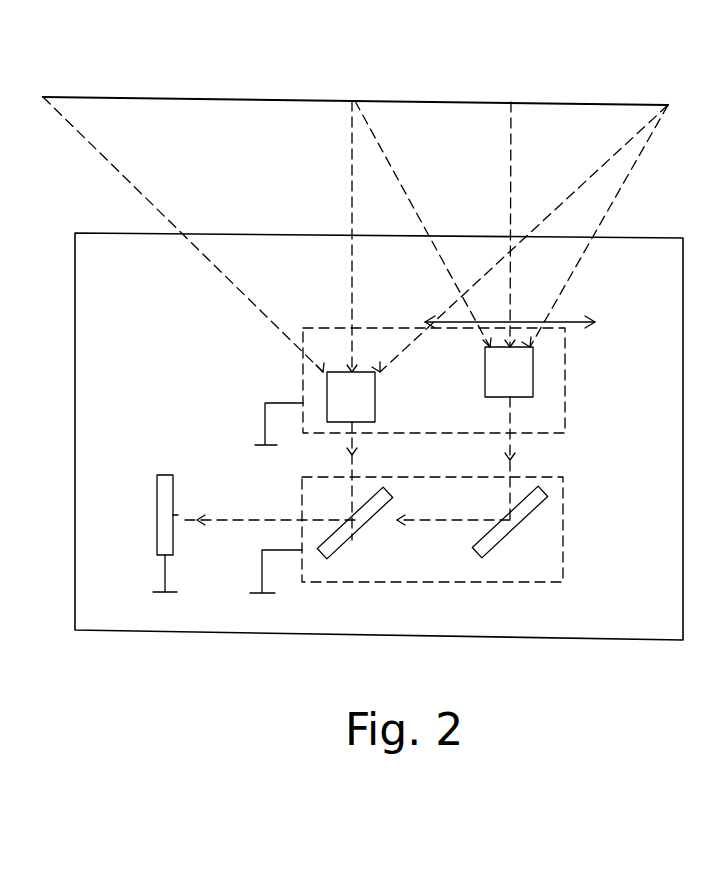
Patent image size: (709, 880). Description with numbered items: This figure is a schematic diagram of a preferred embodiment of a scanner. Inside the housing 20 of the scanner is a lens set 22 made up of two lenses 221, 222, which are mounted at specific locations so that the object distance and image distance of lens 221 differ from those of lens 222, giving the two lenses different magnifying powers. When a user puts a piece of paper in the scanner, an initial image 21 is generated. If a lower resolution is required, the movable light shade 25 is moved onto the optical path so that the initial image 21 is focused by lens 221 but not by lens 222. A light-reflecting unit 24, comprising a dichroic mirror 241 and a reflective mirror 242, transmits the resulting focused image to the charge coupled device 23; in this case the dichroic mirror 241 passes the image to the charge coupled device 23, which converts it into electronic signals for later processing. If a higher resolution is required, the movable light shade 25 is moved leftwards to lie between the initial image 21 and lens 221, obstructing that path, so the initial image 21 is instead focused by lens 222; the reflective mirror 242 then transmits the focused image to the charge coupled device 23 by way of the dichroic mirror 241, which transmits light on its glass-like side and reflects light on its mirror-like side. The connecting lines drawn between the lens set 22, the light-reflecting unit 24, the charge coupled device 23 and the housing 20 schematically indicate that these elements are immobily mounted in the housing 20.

The housing 20 is at (163, 345).
The initial image 21 is at (445, 102).
The lens set 22 is at (444, 393).
The lens 221 is at (368, 407).
The lens 222 is at (525, 382).
The charge coupled device 23 is at (160, 503).
The light-reflecting unit 24 is at (442, 554).
The dichroic mirror 241 is at (353, 537).
The reflective mirror 242 is at (510, 533).
The movable light shade 25 is at (560, 322).